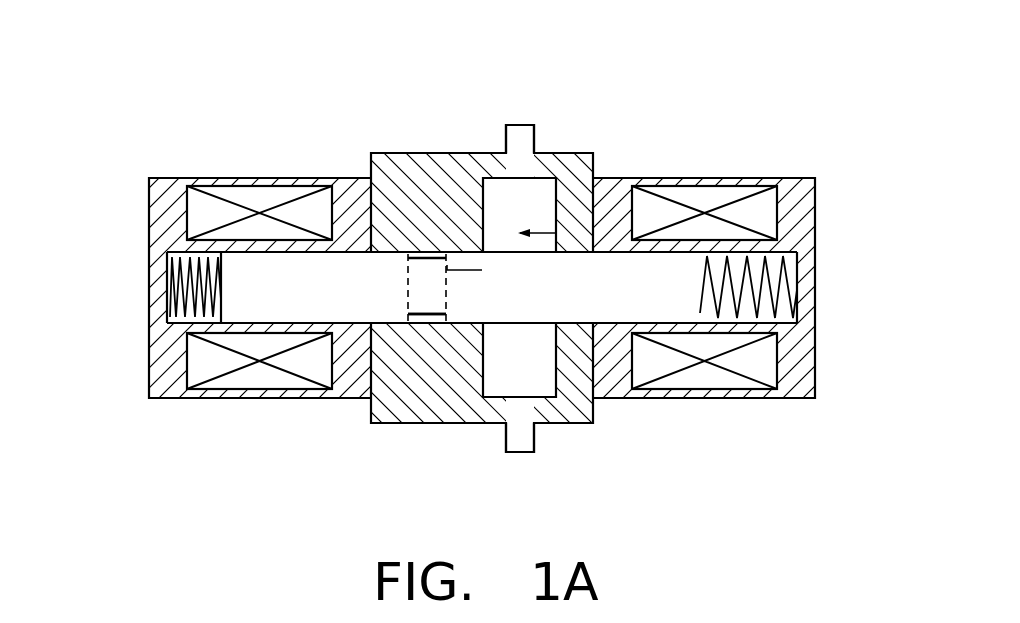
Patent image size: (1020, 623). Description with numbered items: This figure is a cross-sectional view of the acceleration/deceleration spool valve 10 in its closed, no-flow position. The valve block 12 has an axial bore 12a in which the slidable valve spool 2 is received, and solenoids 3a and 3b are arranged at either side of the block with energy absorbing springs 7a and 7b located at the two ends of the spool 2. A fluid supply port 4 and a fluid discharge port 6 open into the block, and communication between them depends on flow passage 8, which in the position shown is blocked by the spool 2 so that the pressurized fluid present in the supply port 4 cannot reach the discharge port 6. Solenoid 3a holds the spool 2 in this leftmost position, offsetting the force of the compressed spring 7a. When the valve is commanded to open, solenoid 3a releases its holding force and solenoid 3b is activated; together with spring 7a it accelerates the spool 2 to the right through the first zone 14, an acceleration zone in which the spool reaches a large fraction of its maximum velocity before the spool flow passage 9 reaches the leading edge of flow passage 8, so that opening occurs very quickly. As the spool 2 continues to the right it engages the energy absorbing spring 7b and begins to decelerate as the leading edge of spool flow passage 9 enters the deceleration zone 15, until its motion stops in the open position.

The valve spool 2 is at (546, 303).
The solenoid 3a is at (252, 198).
The solenoid 3b is at (755, 210).
The fluid supply port 4 is at (523, 440).
The fluid discharge port 6 is at (520, 135).
The energy absorbing spring 7a is at (173, 287).
The energy absorbing spring 7b is at (782, 290).
The flow passage 8 is at (508, 217).
The spool flow passage 9 is at (430, 322).
The acceleration/deceleration spool valve 10 is at (708, 414).
The valve block 12 is at (575, 152).
The axial bore 12a is at (423, 252).
The first zone 14 is at (463, 268).
The deceleration zone 15 is at (540, 233).